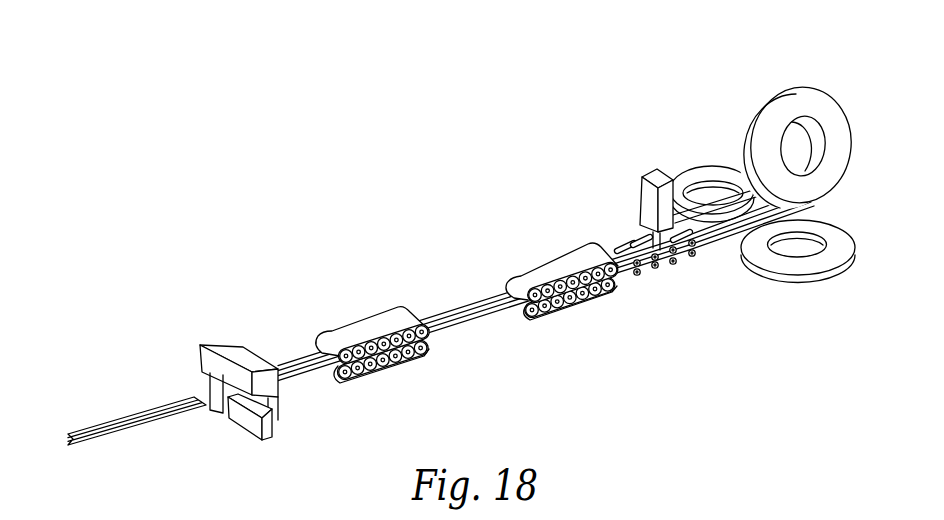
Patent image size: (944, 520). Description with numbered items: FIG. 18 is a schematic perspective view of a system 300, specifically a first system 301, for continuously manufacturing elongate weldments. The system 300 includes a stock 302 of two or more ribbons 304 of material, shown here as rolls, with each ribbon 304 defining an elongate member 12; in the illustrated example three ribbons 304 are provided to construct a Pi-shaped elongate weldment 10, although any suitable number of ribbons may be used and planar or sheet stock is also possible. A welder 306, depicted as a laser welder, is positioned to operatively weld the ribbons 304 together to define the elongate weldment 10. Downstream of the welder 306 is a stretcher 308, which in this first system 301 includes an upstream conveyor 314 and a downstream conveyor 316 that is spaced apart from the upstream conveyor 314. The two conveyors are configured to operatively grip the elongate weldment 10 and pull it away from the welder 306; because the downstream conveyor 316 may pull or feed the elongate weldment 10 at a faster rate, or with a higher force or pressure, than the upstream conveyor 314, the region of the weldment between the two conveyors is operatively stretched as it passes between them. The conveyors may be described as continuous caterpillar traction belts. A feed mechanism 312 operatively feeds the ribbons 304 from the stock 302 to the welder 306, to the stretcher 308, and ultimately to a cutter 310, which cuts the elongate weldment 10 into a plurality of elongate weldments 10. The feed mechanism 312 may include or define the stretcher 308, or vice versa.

The system 300 is at (240, 94).
The first system 301 is at (258, 182).
The stock 302 is at (673, 68).
The ribbon 304 is at (767, 92).
The welder 306 is at (650, 172).
The stretcher 308 is at (339, 275).
The cutter 310 is at (232, 343).
The feed mechanism 312 is at (474, 220).
The upstream conveyor 314 is at (541, 259).
The downstream conveyor 316 is at (352, 322).
The elongate weldment 10 is at (143, 437).
The elongate member 12 is at (775, 180).